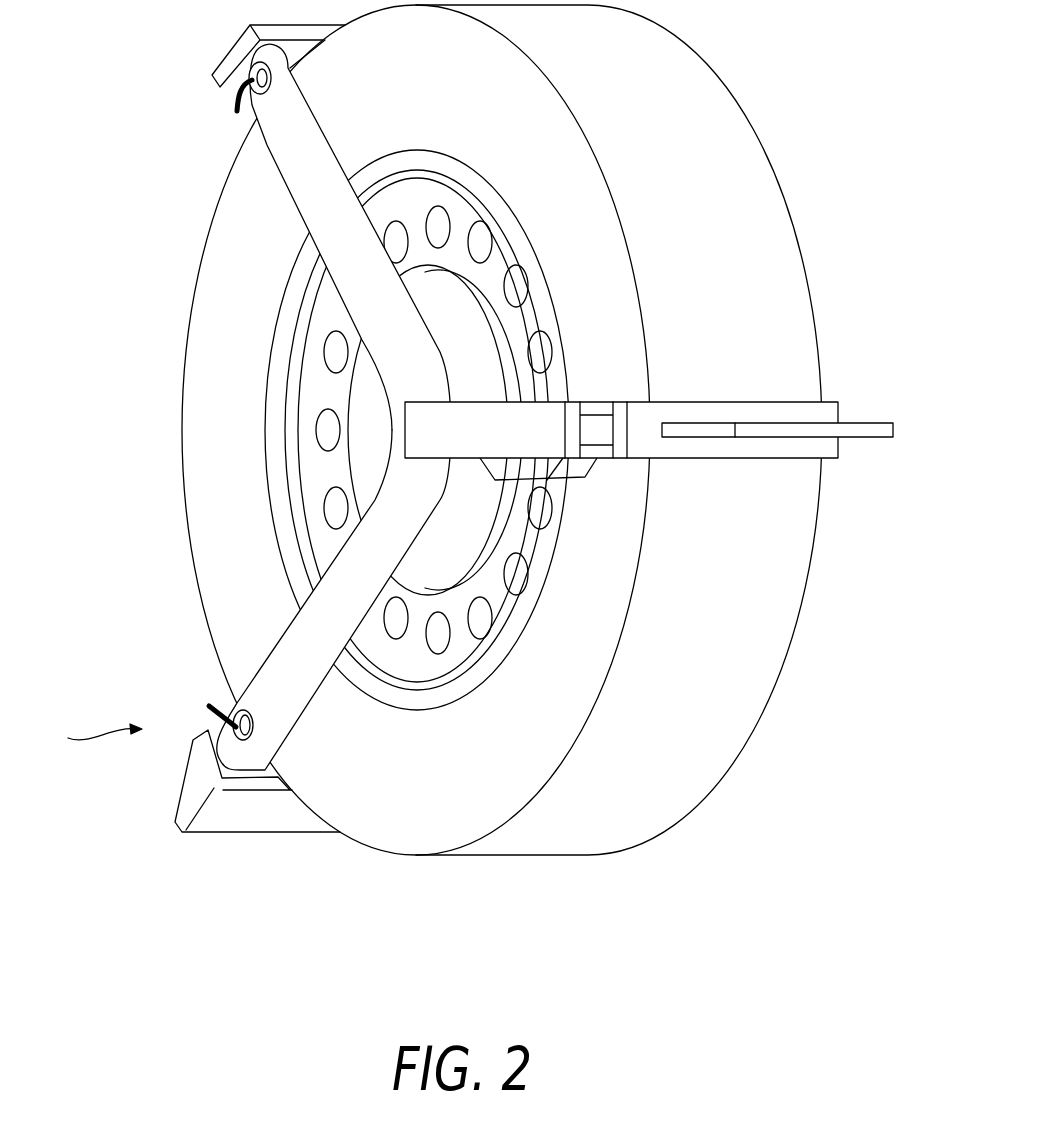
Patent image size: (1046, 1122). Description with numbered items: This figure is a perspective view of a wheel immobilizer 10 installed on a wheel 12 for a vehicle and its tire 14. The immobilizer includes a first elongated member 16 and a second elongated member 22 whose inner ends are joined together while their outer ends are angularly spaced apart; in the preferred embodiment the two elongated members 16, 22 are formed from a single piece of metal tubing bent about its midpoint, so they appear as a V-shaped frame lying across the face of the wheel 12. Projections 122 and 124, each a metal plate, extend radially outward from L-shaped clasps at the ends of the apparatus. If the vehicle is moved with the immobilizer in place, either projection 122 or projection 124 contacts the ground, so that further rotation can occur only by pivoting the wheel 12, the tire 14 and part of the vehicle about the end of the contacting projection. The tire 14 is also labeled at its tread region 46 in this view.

The wheel immobilizer 10 is at (86, 739).
The wheel 12 is at (317, 470).
The tire 14 is at (237, 293).
The first elongated member 16 is at (320, 188).
The second elongated member 22 is at (350, 575).
The tire 46 is at (667, 88).
The projection 122 is at (246, 807).
The projection 124 is at (862, 418).